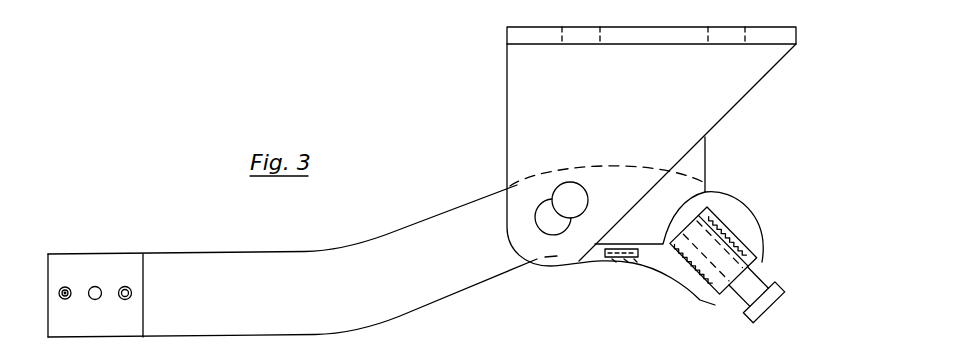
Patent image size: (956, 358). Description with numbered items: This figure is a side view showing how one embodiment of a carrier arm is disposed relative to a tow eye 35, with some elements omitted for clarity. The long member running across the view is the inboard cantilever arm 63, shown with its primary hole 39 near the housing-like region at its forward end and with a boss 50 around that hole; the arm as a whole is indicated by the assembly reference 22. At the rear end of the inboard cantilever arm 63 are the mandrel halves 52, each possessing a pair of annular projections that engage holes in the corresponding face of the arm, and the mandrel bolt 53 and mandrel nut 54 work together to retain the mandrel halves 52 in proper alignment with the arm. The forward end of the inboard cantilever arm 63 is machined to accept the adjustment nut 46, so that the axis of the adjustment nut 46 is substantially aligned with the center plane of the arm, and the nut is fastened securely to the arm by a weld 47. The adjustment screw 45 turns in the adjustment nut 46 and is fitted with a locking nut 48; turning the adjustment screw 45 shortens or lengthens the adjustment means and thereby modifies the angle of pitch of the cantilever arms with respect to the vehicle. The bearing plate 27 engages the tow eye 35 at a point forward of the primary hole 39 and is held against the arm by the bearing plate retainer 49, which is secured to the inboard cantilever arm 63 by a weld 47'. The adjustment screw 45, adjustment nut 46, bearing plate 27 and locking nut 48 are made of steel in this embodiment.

The support arm assembly 22 is at (292, 261).
The bearing plate 27 is at (700, 163).
The tow eye 35 is at (733, 97).
The cantilever arm primary hole 39 is at (558, 226).
The adjustment screw 45 is at (778, 282).
The adjustment nut 46 is at (727, 230).
The weld 47 is at (728, 259).
The weld 47' is at (635, 279).
The locking nut 48 is at (752, 268).
The bearing plate retainer 49 is at (617, 258).
The boss 50 is at (560, 183).
The mandrel halves 52 is at (133, 263).
The mandrel bolt 53 is at (120, 287).
The mandrel nut 54 is at (62, 287).
The inboard cantilever arm 63 is at (283, 260).